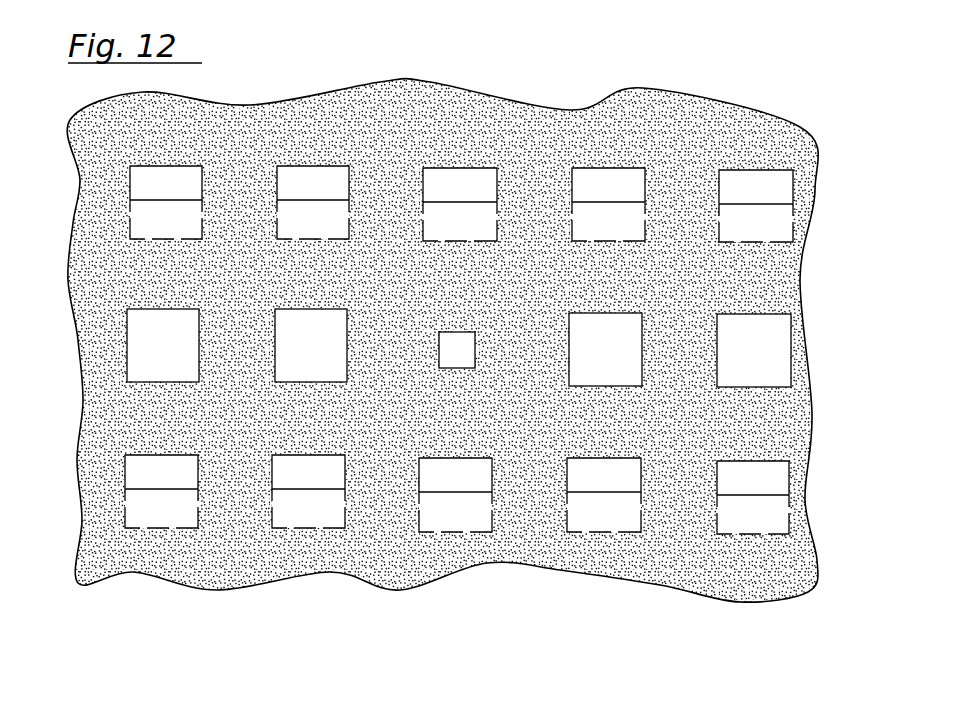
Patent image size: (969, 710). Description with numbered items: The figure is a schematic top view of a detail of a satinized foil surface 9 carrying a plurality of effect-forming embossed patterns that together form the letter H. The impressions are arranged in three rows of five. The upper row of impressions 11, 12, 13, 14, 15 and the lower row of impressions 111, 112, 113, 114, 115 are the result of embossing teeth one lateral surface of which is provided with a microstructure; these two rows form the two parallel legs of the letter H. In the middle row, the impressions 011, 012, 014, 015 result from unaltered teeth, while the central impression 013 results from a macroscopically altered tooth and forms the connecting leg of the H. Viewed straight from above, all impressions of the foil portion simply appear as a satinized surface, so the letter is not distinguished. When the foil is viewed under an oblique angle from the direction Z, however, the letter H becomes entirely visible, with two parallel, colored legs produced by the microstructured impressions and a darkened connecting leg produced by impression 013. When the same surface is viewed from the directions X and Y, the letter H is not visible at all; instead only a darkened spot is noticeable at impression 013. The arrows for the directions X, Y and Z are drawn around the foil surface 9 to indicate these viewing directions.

The satinized foil surface 9 is at (672, 118).
The impression 11 is at (166, 185).
The impression 12 is at (313, 185).
The impression 13 is at (460, 187).
The impression 14 is at (608, 187).
The impression 15 is at (756, 189).
The impression 011 is at (163, 330).
The impression 012 is at (311, 330).
The impression 013 is at (453, 324).
The impression 014 is at (605, 333).
The impression 015 is at (754, 335).
The impression 111 is at (161, 475).
The impression 112 is at (308, 475).
The impression 113 is at (455, 479).
The impression 114 is at (604, 479).
The impression 115 is at (753, 481).
The viewing direction X x is at (455, 577).
The viewing direction Y y is at (102, 342).
The viewing direction Z z is at (460, 122).